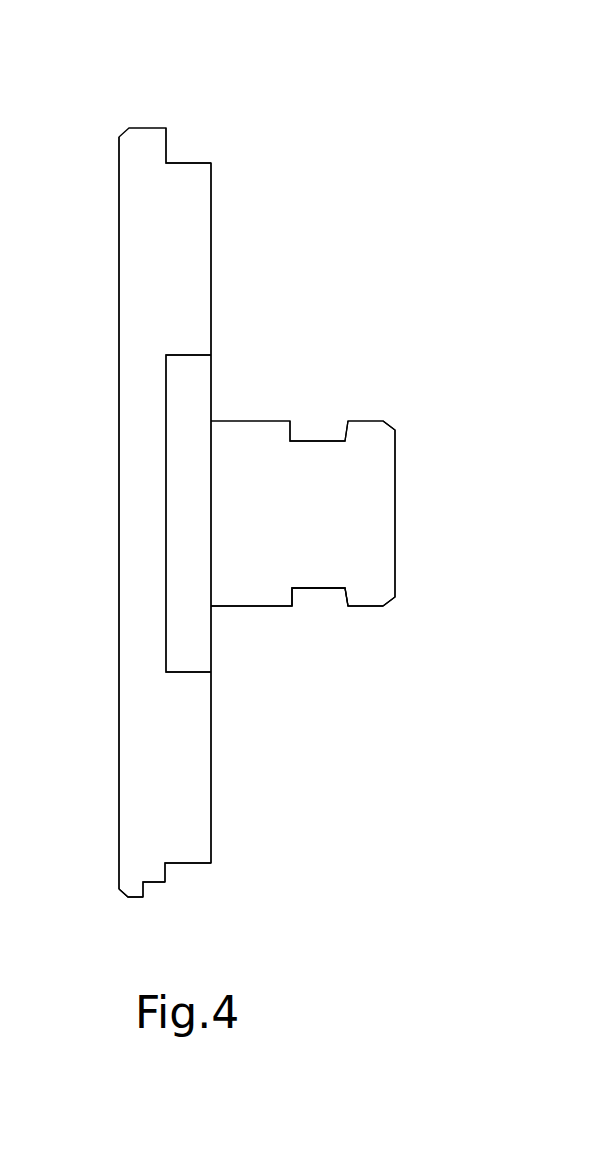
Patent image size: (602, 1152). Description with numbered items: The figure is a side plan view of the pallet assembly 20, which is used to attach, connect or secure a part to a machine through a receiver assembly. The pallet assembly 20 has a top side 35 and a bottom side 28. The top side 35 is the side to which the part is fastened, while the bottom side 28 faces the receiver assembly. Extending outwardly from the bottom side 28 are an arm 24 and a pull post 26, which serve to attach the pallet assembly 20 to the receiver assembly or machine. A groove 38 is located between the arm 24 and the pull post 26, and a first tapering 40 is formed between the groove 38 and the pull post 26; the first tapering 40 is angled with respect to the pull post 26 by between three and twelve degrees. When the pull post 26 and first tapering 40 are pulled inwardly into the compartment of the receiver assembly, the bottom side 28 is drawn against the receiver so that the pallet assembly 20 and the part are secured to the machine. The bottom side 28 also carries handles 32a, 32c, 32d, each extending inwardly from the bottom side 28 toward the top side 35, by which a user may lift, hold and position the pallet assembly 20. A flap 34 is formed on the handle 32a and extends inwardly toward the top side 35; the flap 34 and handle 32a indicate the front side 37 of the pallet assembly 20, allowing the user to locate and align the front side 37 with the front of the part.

The pallet assembly 20 is at (285, 122).
The arm 24 is at (252, 606).
The pull post 26 is at (366, 606).
The bottom side 28 is at (211, 295).
The handle 32a is at (188, 864).
The handle 32c is at (188, 163).
The handle 32d is at (183, 489).
The flap 34 is at (154, 882).
The top side 35 is at (119, 717).
The front side 37 is at (132, 898).
The groove 38 is at (303, 441).
The first tapering 40 is at (341, 592).